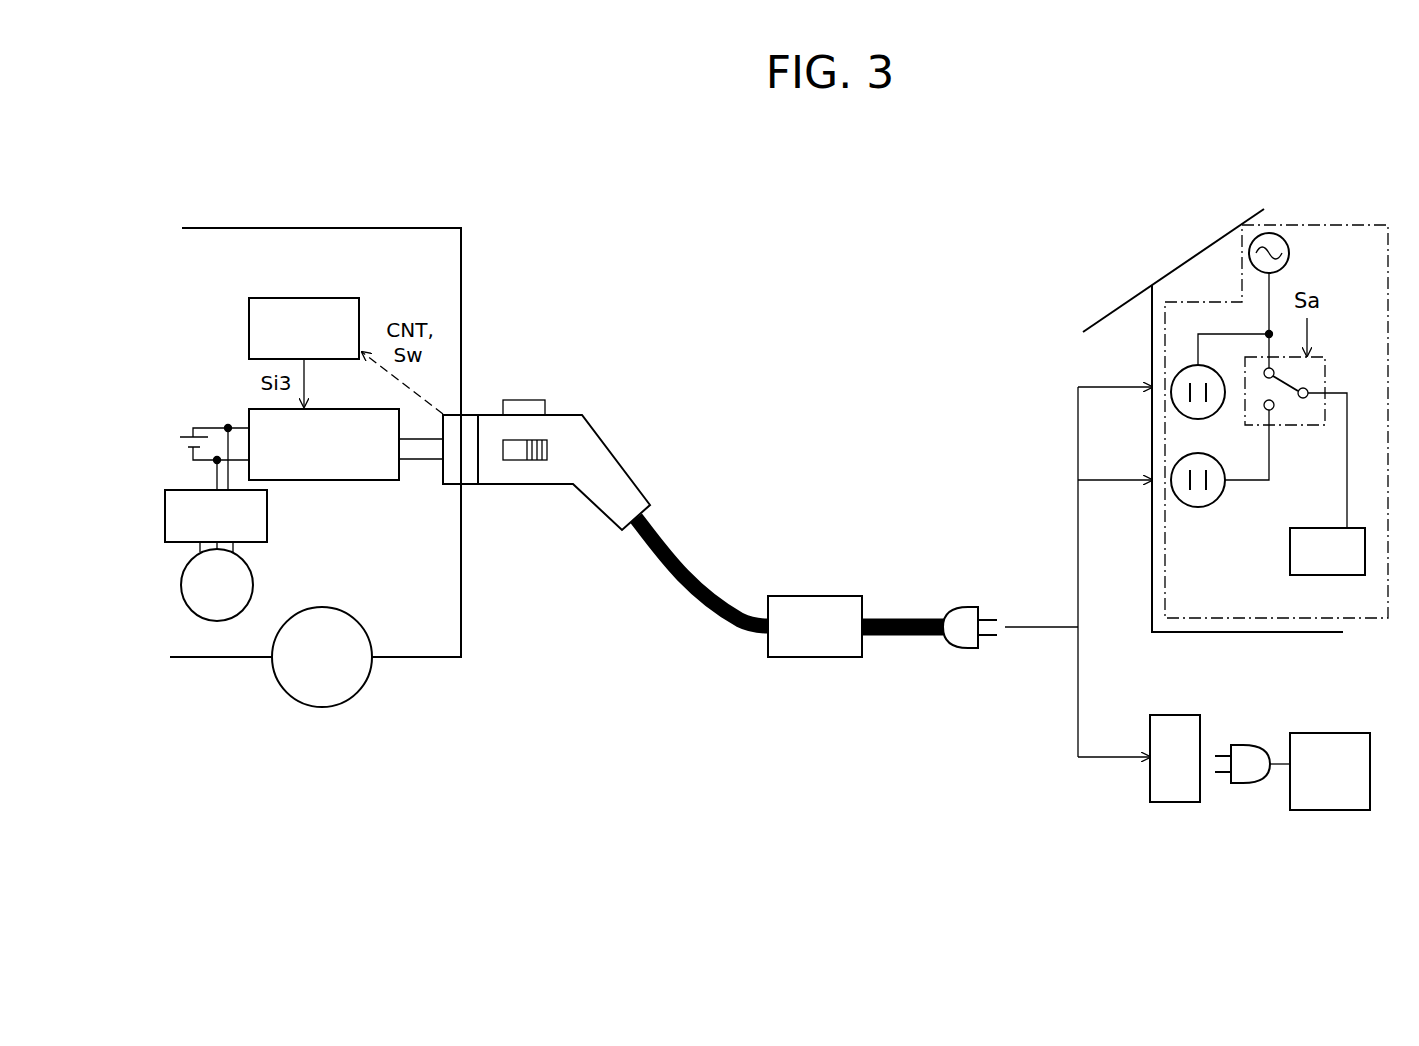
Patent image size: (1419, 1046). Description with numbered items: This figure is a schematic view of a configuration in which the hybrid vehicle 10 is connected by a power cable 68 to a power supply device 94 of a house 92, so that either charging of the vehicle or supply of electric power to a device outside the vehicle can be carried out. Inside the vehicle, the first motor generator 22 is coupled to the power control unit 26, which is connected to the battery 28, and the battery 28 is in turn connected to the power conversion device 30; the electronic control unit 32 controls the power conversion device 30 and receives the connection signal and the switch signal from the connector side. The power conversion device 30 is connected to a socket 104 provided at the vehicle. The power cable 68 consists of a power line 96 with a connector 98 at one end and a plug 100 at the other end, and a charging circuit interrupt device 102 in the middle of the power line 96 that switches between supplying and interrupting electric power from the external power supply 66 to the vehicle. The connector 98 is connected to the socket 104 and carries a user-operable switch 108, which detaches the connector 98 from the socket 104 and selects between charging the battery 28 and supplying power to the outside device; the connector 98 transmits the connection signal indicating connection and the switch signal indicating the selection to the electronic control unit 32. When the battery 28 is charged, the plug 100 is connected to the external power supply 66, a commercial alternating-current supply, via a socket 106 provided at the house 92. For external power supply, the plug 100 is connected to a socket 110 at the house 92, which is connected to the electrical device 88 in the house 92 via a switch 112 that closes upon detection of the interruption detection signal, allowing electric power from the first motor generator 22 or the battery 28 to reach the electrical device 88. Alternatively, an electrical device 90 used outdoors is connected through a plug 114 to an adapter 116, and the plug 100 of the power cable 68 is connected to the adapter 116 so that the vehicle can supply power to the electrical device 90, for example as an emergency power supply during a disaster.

The hybrid vehicle 10 is at (405, 211).
The first motor generator 22 is at (181, 584).
The power control unit 26 is at (267, 520).
The battery 28 is at (184, 430).
The power conversion device 30 is at (320, 481).
The electronic control unit 32 is at (322, 298).
The external power supply 66 is at (1290, 253).
The power cable 68 is at (695, 562).
The electrical device 88 is at (1290, 553).
The electrical device 90 is at (1331, 732).
The house 92 is at (1199, 252).
The power supply device 94 is at (1226, 620).
The power line 96 is at (717, 613).
The connector 98 is at (558, 414).
The plug 100 is at (963, 650).
The charging circuit interrupt device 102 is at (830, 595).
The socket 104 is at (450, 488).
The socket 106 is at (1186, 366).
The switch 108 is at (533, 461).
The socket 110 is at (1198, 508).
The switch 112 is at (1300, 426).
The plug 114 is at (1250, 784).
The adapter 116 is at (1178, 803).